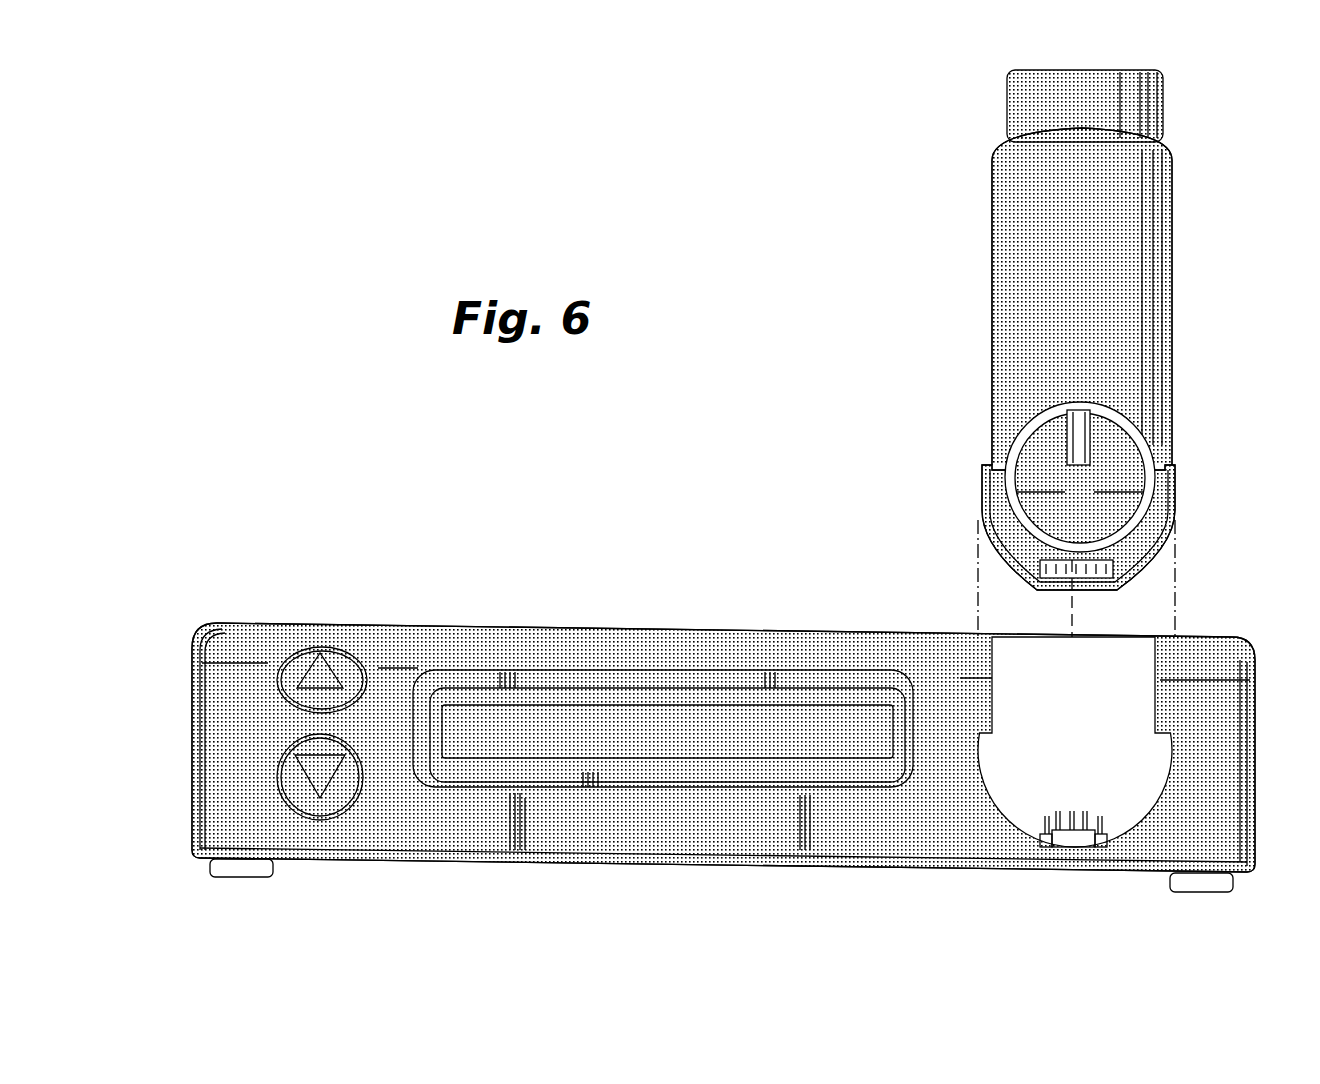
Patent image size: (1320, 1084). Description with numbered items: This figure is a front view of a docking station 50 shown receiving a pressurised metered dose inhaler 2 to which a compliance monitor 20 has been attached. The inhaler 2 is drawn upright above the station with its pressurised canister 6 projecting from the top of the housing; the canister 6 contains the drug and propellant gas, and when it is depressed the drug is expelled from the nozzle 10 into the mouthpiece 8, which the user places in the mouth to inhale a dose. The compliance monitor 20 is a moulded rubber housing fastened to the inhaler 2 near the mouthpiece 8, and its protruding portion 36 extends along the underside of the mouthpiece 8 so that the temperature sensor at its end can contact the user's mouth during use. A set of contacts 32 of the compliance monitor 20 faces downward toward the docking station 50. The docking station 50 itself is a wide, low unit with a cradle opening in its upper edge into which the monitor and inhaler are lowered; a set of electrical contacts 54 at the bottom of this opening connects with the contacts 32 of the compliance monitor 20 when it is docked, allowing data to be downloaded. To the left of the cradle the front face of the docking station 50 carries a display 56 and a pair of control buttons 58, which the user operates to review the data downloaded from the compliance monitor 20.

The pressurised metered dose inhaler 2 is at (1056, 379).
The pressurised canister 6 is at (1163, 108).
The mouthpiece 8 is at (1088, 508).
The nozzle 10 is at (1072, 445).
The compliance monitor 20 is at (980, 517).
The set of contacts 32 is at (1076, 604).
The protruding portion 36 is at (1120, 563).
The docking station 50 is at (625, 618).
The set of electrical contacts 54 is at (1075, 805).
The display 56 is at (656, 749).
The control buttons 58 is at (318, 750).